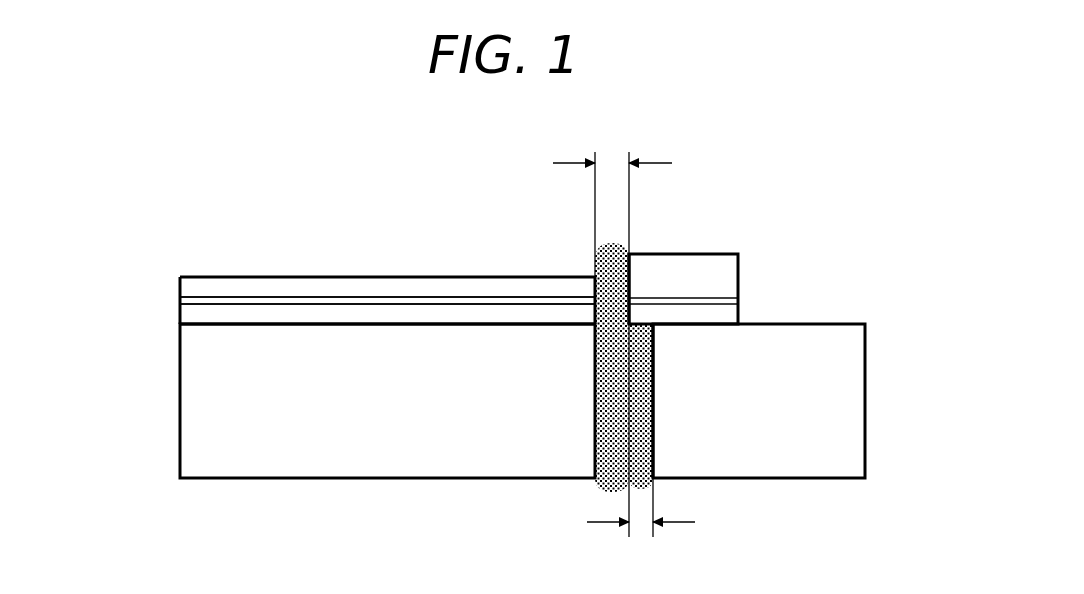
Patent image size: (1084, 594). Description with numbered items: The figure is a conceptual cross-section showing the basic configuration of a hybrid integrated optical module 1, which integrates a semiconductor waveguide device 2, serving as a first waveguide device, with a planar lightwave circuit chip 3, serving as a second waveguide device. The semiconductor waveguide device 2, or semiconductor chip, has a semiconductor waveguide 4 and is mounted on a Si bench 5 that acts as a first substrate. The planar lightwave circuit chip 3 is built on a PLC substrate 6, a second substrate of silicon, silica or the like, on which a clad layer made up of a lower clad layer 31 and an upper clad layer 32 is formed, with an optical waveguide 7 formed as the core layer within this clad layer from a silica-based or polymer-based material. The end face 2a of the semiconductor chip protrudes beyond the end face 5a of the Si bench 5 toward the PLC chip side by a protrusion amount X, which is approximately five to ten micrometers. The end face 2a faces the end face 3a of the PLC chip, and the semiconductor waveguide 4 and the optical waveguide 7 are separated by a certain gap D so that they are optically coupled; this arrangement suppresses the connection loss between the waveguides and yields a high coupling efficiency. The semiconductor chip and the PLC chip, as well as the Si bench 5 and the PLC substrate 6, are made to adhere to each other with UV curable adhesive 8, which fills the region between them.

The hybrid integrated optical module 1 is at (481, 228).
The semiconductor waveguide device 2 is at (704, 244).
The end face of the semiconductor chip 2a is at (612, 258).
The planar lightwave circuit chip 3 is at (359, 262).
The end face of the PLC chip 3a is at (598, 286).
The lower clad layer 31 is at (186, 311).
The upper clad layer 32 is at (186, 286).
The semiconductor waveguide 4 is at (718, 298).
The Si bench 5 is at (754, 438).
The end face of the Si bench 5a is at (644, 354).
The PLC substrate 6 is at (288, 465).
The optical waveguide 7 is at (252, 296).
The UV curable adhesive 8 is at (604, 397).
The gap D is at (612, 333).
The protrusion amount X is at (641, 518).